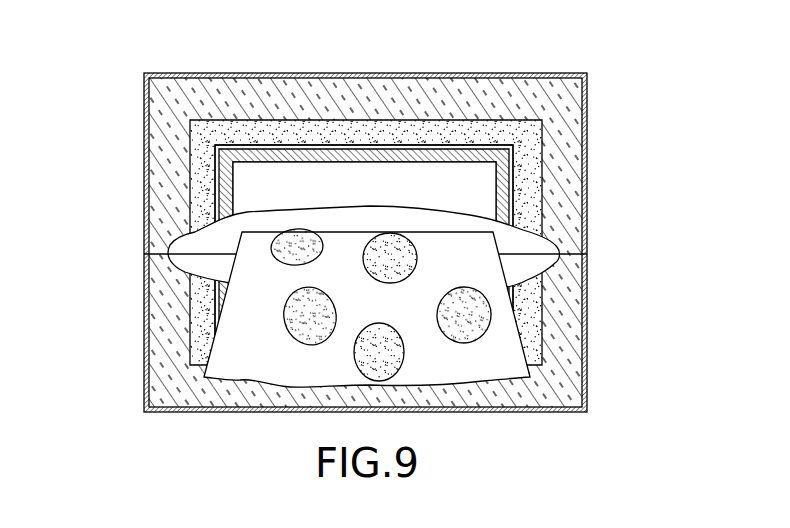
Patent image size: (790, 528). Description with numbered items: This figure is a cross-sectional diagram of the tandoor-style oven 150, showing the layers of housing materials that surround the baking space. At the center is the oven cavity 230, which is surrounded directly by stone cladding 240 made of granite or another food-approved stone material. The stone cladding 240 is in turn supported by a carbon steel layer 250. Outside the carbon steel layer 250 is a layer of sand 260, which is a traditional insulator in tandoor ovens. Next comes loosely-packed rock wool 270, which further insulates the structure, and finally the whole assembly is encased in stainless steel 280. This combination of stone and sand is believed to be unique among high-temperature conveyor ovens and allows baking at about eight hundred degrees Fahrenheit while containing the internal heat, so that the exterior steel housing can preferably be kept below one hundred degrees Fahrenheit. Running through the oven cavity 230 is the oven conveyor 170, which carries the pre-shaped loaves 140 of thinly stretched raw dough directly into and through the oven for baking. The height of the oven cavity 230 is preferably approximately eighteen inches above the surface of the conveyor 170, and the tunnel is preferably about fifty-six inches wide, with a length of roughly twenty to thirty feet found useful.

The oven 150 is at (598, 58).
The stainless steel 280 is at (143, 140).
The rock wool 270 is at (162, 188).
The layer of sand 260 is at (472, 130).
The carbon steel layer 250 is at (333, 145).
The stone cladding 240 is at (243, 155).
The oven cavity 230 is at (385, 194).
The oven conveyor 170 is at (507, 358).
The shaped loaves 140 is at (489, 309).